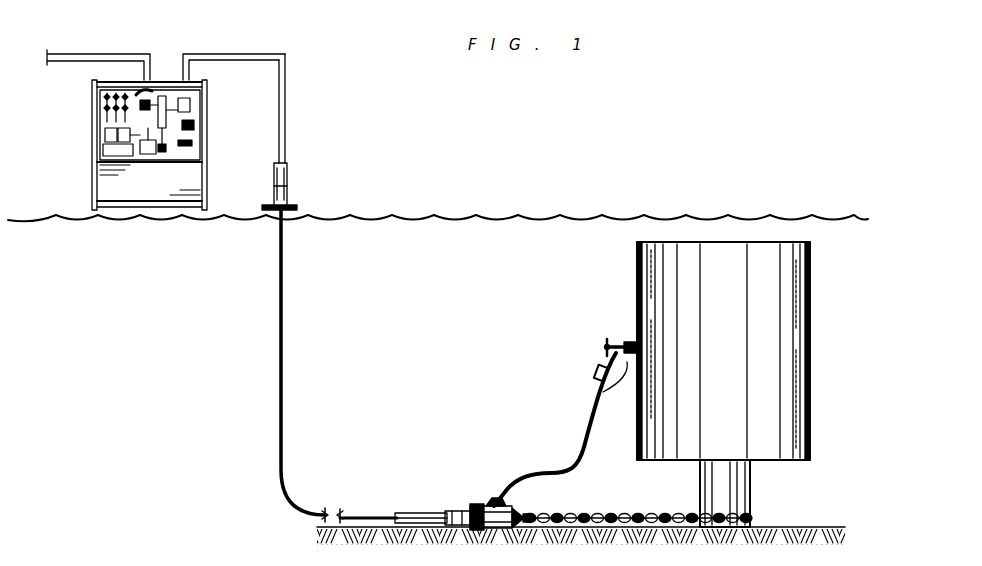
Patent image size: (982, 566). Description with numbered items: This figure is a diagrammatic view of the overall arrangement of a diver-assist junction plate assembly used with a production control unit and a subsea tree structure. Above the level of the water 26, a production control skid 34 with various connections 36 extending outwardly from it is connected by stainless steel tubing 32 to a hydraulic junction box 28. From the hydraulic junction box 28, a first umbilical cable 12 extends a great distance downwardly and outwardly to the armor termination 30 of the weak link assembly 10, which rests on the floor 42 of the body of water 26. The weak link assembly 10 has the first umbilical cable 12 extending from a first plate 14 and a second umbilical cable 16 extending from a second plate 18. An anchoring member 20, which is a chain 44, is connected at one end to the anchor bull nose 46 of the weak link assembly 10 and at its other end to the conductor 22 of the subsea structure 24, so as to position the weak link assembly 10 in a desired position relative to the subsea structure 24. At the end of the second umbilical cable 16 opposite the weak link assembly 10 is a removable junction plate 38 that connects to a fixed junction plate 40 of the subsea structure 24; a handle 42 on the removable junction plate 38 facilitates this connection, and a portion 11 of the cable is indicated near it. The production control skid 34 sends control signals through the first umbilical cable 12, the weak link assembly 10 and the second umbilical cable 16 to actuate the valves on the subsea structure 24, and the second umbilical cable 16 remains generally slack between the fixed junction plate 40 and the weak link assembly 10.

The weak link assembly 10 is at (467, 493).
The hose section 11 is at (598, 397).
The first umbilical cable 12 is at (278, 345).
The first plate 14 is at (453, 509).
The second umbilical cable 16 is at (582, 437).
The second plate 18 is at (514, 508).
The anchoring member 20 is at (601, 514).
The conductor 22 is at (752, 495).
The subsea structure 24 is at (795, 322).
The water 26 is at (530, 217).
The hydraulic junction box 28 is at (288, 185).
The armor termination 30 is at (397, 512).
The stainless steel tubing 32 is at (286, 113).
The production control skid 34 is at (158, 82).
The connections 36 is at (92, 54).
The removable junction plate 38 is at (609, 339).
The fixed junction plate 40 is at (637, 338).
The handle 42 is at (598, 375).
The chain 44 is at (625, 518).
The anchor bull nose 46 is at (525, 512).